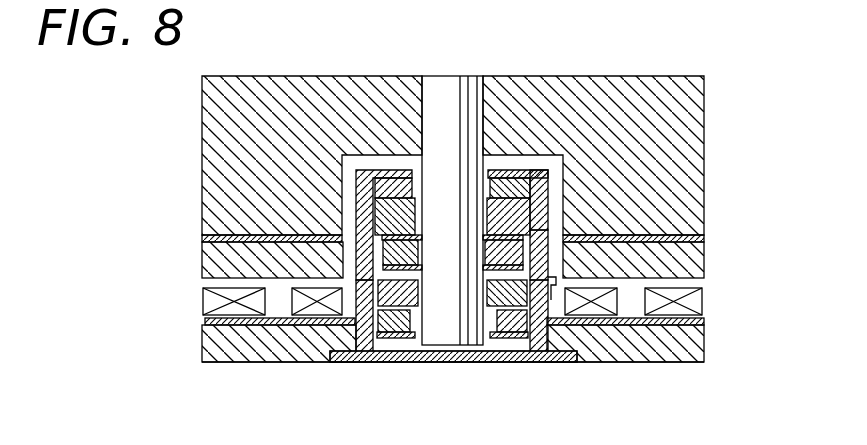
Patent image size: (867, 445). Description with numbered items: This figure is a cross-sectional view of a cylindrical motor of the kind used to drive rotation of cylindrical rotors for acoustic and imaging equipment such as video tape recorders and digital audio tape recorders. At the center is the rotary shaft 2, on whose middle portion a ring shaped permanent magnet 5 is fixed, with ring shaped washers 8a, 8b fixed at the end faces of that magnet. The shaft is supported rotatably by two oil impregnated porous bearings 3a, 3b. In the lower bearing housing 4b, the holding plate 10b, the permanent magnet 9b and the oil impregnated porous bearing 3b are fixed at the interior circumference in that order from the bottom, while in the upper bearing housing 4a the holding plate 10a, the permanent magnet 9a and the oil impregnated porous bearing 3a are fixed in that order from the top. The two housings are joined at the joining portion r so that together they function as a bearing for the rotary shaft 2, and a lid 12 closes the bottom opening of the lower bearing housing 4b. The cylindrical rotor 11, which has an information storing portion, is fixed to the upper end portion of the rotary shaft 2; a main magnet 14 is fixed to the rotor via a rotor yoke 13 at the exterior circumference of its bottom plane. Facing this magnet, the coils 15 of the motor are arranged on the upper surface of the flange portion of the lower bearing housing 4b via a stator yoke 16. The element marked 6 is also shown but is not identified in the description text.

The rotary shaft 2 is at (447, 77).
The oil impregnated porous bearing 3a is at (548, 208).
The oil impregnated porous bearing 3b is at (553, 270).
The upper bearing housing 4a is at (540, 170).
The lower bearing housing 4b is at (707, 327).
The ring shaped permanent magnet 5 is at (550, 245).
The seal ring 6 is at (392, 165).
The ring shaped washer 8a is at (363, 215).
The ring shaped washer 8b is at (362, 352).
The permanent magnet 9a is at (502, 170).
The permanent magnet 9b is at (393, 340).
The holding plate 10a is at (383, 172).
The holding plate 10b is at (512, 340).
The cylindrical rotor 11 is at (625, 92).
The lid 12 is at (448, 362).
The rotor yoke 13 is at (217, 237).
The main magnet 14 is at (208, 260).
The coils 15 is at (208, 305).
The stator yoke 16 is at (295, 325).
The joining portion r is at (550, 280).